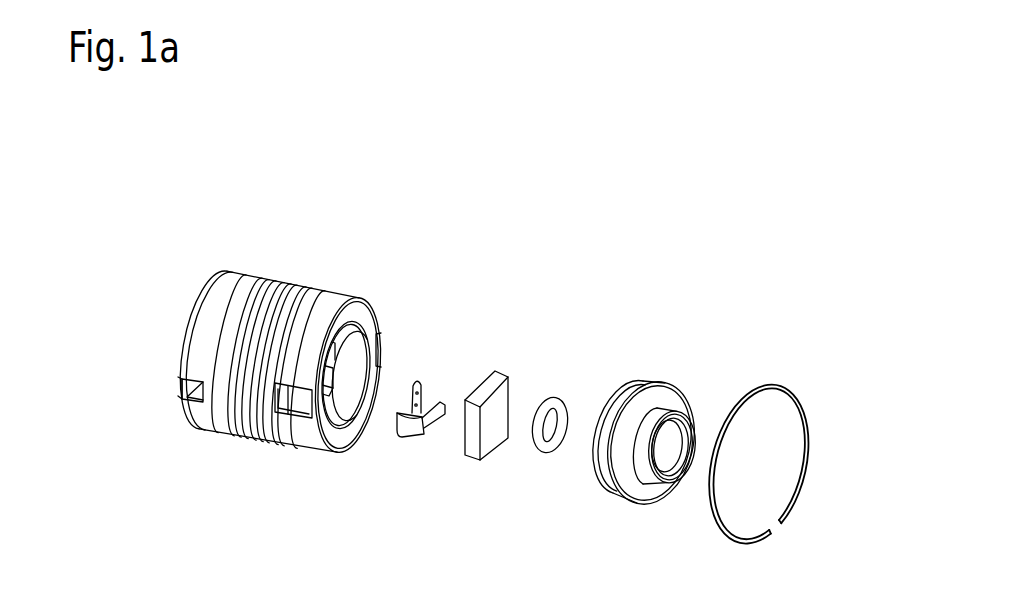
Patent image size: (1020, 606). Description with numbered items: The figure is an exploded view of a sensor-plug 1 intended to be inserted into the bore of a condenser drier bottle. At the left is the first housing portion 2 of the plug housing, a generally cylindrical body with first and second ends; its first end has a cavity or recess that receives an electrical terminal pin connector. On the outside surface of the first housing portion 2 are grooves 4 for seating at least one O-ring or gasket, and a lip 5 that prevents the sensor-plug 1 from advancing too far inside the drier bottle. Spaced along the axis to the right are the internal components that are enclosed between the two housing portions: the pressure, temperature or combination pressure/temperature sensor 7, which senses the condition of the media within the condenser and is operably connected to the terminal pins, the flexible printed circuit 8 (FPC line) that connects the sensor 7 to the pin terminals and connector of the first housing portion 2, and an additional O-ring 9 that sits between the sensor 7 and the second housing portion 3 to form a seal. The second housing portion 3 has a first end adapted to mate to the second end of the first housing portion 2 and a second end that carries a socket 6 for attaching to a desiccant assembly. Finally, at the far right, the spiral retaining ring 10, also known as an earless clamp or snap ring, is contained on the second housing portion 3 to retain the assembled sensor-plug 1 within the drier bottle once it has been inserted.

The sensor-plug 1 is at (575, 102).
The first housing portion 2 is at (345, 288).
The second housing portion 3 is at (637, 392).
The grooves 4 is at (280, 280).
The lip 5 is at (200, 373).
The socket 6 is at (673, 422).
The sensor 7 is at (508, 372).
The flexible printed circuit 8 is at (413, 440).
The O-ring 9 is at (547, 443).
The spiral retaining ring 10 is at (797, 383).